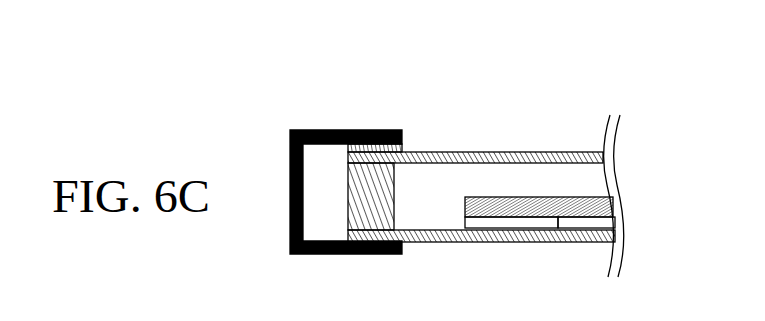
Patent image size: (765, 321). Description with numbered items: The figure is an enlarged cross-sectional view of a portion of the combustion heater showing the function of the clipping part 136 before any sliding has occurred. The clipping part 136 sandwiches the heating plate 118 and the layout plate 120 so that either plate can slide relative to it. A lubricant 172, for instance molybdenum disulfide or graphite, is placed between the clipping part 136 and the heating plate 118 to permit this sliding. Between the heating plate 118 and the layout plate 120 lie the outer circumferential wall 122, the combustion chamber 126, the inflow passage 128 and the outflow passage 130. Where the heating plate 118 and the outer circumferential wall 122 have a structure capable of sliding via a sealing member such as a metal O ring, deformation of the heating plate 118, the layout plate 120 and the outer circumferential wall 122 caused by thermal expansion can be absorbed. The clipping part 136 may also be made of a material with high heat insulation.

The clipping part 136 is at (347, 130).
The lubricant 172 is at (400, 147).
The heating plate 118 is at (555, 152).
The outflow passage 130 is at (517, 180).
The outer circumferential wall 122 is at (395, 178).
The inflow passage 128 is at (574, 223).
The layout plate 120 is at (495, 242).
The combustion chamber 126 is at (438, 217).